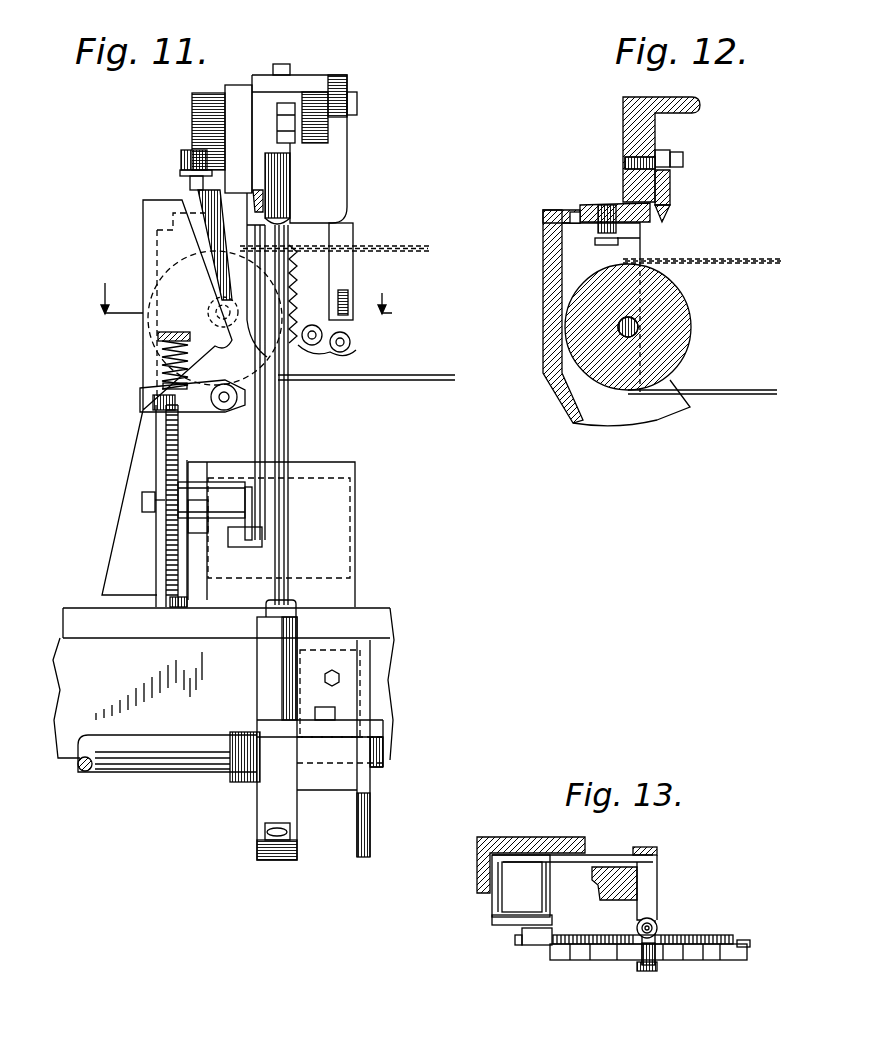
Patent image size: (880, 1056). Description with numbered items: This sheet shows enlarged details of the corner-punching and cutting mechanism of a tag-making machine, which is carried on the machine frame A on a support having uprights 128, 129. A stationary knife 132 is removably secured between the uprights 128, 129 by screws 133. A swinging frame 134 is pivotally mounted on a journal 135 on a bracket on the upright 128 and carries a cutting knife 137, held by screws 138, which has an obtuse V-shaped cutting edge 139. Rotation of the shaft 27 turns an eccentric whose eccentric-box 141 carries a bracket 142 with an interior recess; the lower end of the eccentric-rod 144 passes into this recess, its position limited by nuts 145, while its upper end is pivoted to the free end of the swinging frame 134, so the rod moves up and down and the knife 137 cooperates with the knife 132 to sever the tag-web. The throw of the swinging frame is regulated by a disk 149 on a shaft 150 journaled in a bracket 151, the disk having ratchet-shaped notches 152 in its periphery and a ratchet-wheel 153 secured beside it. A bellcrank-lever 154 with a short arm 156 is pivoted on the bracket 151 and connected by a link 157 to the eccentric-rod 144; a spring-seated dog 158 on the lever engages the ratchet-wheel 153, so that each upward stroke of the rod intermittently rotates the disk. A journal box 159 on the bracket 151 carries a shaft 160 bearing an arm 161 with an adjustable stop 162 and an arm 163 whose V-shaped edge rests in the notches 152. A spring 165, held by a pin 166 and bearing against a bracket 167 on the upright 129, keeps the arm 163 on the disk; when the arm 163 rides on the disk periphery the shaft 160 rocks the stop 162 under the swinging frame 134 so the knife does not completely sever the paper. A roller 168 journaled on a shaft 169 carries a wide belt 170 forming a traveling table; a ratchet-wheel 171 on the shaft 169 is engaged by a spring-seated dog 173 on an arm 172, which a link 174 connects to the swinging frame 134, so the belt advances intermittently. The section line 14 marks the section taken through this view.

In FIG. 11, the swinging frame 134 is at (237, 84).
In FIG. 12, the swinging frame 134 is at (636, 108).
In FIG. 11, the journal 135 is at (358, 118).
In FIG. 11, the stationary knife 132 is at (262, 200).
In FIG. 12, the stationary knife 132 is at (622, 203).
In FIG. 11, the cutting knife 137 is at (254, 195).
In FIG. 12, the cutting knife 137 is at (671, 190).
In FIG. 11, the stop 162 is at (181, 158).
In FIG. 11, the arm 161 is at (203, 322).
In FIG. 11, the upright 129 is at (165, 245).
In FIG. 11, the roller 168 is at (255, 252).
In FIG. 12, the roller 168 is at (675, 328).
In FIG. 11, the link 174 is at (343, 241).
In FIG. 11, the belt 170 is at (450, 376).
In FIG. 12, the belt 170 is at (740, 388).
In FIG. 11, the arm 172 is at (352, 285).
In FIG. 11, the spring-seated dog 173 is at (345, 352).
In FIG. 11, the ratchet-wheel 171 is at (288, 280).
In FIG. 11, the eccentric-rod 144 is at (281, 566).
In FIG. 11, the nuts 145 is at (263, 607).
In FIG. 11, the bracket 142 is at (265, 684).
In FIG. 11, the eccentric-box 141 is at (273, 787).
In FIG. 11, the shaft 27 is at (108, 762).
In FIG. 11, the frame A is at (187, 707).
In FIG. 11, the disk 149 is at (156, 458).
In FIG. 13, the disk 149 is at (713, 960).
In FIG. 11, the ratchet-shaped notches 152 is at (165, 447).
In FIG. 13, the ratchet-shaped notches 152 is at (588, 950).
In FIG. 11, the arm 163 is at (195, 396).
In FIG. 13, the arm 163 is at (652, 898).
In FIG. 11, the shaft 160 is at (237, 398).
In FIG. 11, the bracket 167 is at (160, 334).
In FIG. 11, the spring 165 is at (165, 352).
In FIG. 13, the spring 165 is at (657, 907).
In FIG. 11, the pin 166 is at (162, 381).
In FIG. 13, the pin 166 is at (652, 925).
In FIG. 11, the link 157 is at (262, 432).
In FIG. 13, the link 157 is at (658, 852).
In FIG. 11, the bellcrank-lever 154 is at (250, 495).
In FIG. 13, the bellcrank-lever 154 is at (563, 856).
In FIG. 11, the bracket 151 is at (200, 517).
In FIG. 13, the bracket 151 is at (477, 865).
In FIG. 11, the shaft 150 is at (141, 501).
In FIG. 13, the shaft 150 is at (650, 972).
In FIG. 11, the ratchet-wheel 153 is at (172, 577).
In FIG. 13, the ratchet-wheel 153 is at (710, 937).
In FIG. 11, the section line 14— 14 is at (90, 325).
In FIG. 12, the screws 138 is at (671, 155).
In FIG. 12, the V-shaped cutting edge 139 is at (666, 216).
In FIG. 12, the screws 133 is at (618, 241).
In FIG. 12, the upright 128 is at (577, 253).
In FIG. 12, the shaft 169 is at (628, 337).
In FIG. 13, the journal box 159 is at (612, 877).
In FIG. 13, the short arm 156 is at (492, 921).
In FIG. 13, the spring-seated dog 158 is at (530, 946).